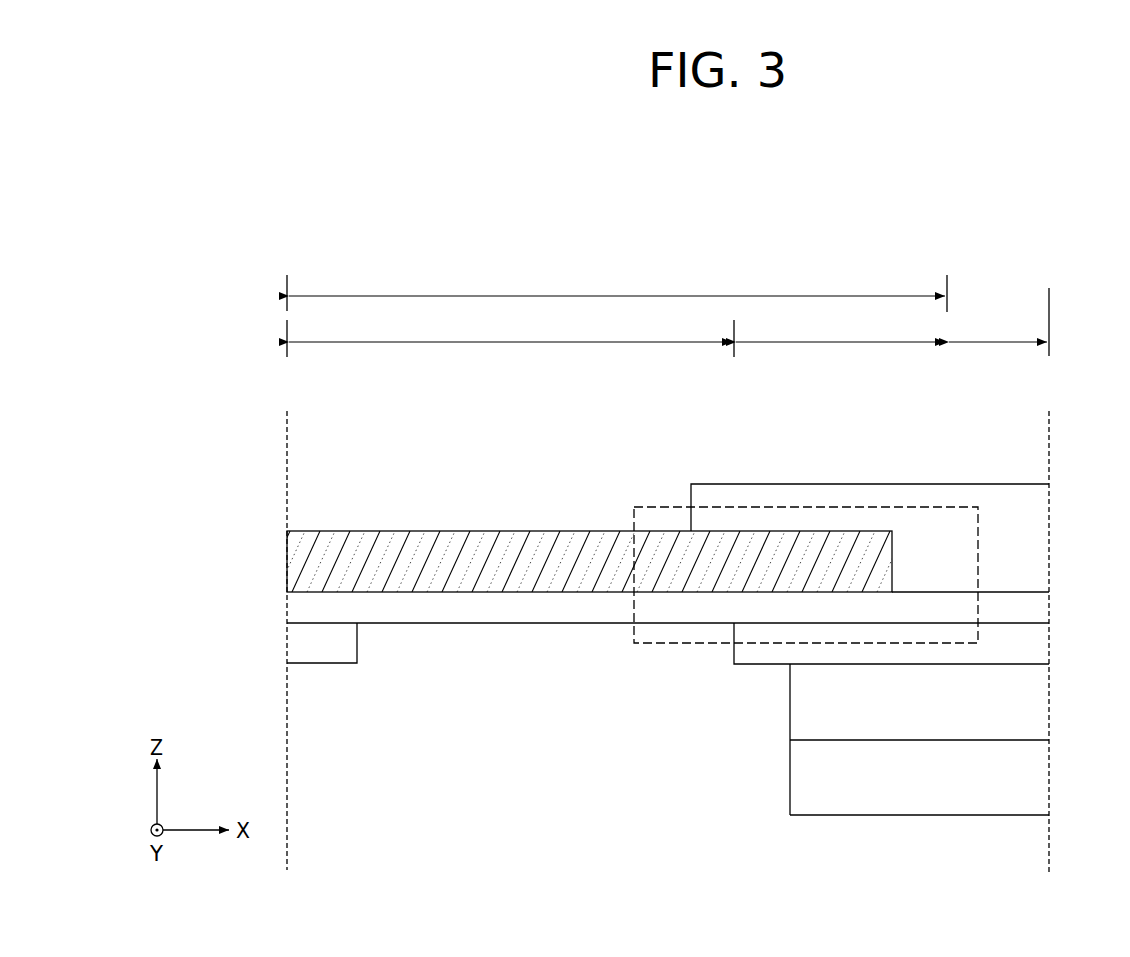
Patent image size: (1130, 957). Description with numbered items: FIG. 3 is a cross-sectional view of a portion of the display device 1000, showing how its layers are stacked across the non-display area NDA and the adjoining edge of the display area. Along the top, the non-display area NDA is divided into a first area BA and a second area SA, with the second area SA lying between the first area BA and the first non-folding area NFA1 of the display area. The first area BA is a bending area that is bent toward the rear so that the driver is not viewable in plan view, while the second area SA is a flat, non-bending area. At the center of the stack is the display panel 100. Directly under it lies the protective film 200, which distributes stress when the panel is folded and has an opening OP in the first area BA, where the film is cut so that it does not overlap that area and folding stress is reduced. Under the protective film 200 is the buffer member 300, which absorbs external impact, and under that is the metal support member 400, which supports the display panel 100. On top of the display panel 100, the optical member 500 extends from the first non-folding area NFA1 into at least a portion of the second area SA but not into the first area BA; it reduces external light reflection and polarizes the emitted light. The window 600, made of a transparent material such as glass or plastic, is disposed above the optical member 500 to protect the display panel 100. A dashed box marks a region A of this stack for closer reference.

The display device 1000 is at (1011, 273).
The window 600 is at (1038, 508).
The optical member 500 is at (1038, 554).
The display panel 100 is at (1038, 608).
The protective film 200 is at (1038, 653).
The buffer member 300 is at (1038, 698).
The support member 400 is at (1038, 763).
The opening OP is at (364, 646).
The region A is at (683, 644).
The non-display area NDA is at (617, 290).
The first area BA is at (510, 334).
The second area SA is at (840, 327).
The first non-folding area NFA1 is at (999, 322).